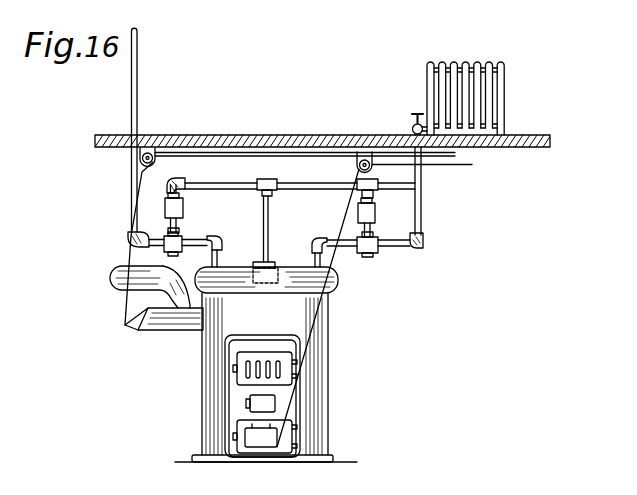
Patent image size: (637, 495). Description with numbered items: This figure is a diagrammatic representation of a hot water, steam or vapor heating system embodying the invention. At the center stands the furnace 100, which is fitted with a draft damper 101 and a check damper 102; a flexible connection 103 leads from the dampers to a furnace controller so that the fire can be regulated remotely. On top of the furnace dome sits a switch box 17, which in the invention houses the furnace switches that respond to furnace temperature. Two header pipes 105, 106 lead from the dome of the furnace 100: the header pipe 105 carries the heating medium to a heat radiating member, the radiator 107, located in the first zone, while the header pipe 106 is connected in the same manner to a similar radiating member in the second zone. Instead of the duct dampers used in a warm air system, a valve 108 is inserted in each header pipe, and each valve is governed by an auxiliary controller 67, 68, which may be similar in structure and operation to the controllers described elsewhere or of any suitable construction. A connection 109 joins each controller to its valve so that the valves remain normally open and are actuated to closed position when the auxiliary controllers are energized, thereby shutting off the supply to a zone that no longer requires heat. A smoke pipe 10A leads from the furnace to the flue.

The smoke pipe 10A is at (127, 302).
The check damper 102 is at (132, 323).
The furnace 100 is at (330, 345).
The draft damper 101 is at (273, 437).
The flexible connection 103 is at (326, 321).
The switch box 17 is at (272, 265).
The auxiliary controller 68 is at (183, 208).
The auxiliary controller 67 is at (357, 211).
The connection 109 is at (177, 226).
The valve 108 is at (170, 253).
The header pipe 106 is at (212, 259).
The header pipe 105 is at (321, 262).
The radiator 107 is at (497, 103).